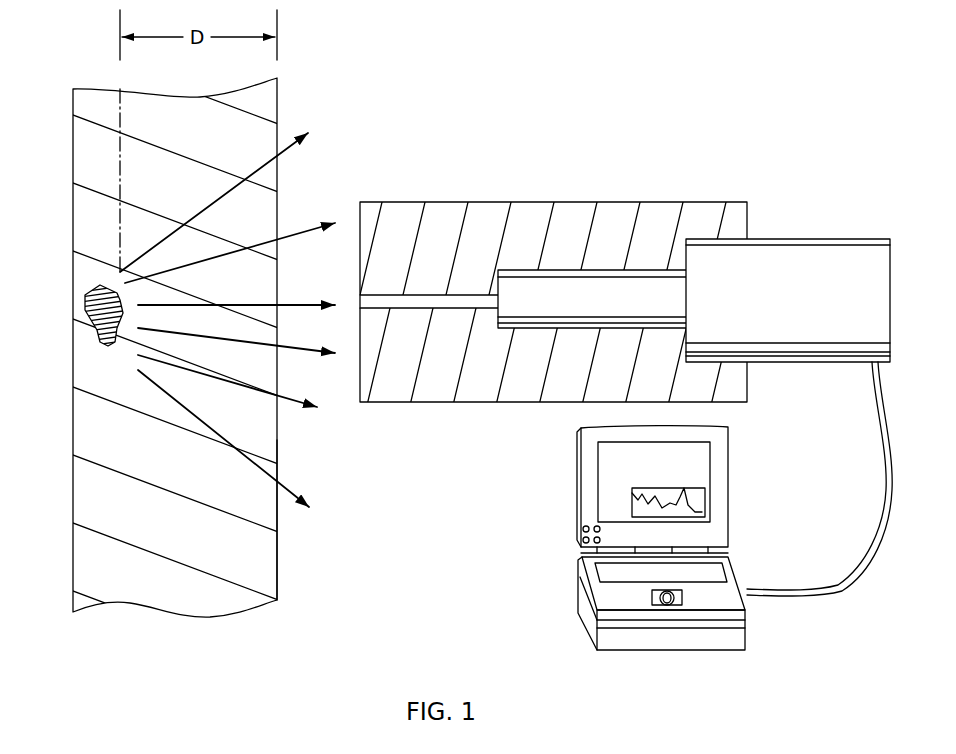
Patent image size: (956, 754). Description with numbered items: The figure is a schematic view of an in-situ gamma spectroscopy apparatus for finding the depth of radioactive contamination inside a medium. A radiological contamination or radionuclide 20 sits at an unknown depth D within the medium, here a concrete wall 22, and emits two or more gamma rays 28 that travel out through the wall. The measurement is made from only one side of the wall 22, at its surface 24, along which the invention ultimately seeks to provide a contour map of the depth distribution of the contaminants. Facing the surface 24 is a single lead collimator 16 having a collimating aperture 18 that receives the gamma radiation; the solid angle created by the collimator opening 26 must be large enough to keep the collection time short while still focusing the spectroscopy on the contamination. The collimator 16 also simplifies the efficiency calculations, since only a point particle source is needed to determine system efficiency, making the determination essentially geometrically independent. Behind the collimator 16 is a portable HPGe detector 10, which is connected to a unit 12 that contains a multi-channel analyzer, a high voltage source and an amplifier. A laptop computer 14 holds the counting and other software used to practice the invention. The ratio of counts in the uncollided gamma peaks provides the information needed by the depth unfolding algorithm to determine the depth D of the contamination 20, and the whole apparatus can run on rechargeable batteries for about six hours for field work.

The portable HPGe detector 10 is at (812, 239).
The unit 12 is at (737, 642).
The laptop computer 14 is at (578, 500).
The single lead collimator 16 is at (520, 202).
The collimating aperture 18 is at (438, 296).
The radiological contamination or radionuclide 20 is at (86, 311).
The concrete wall 22 is at (262, 562).
The surface 24 is at (278, 520).
The collimator opening 26 is at (370, 300).
The gamma rays 28 is at (293, 232).